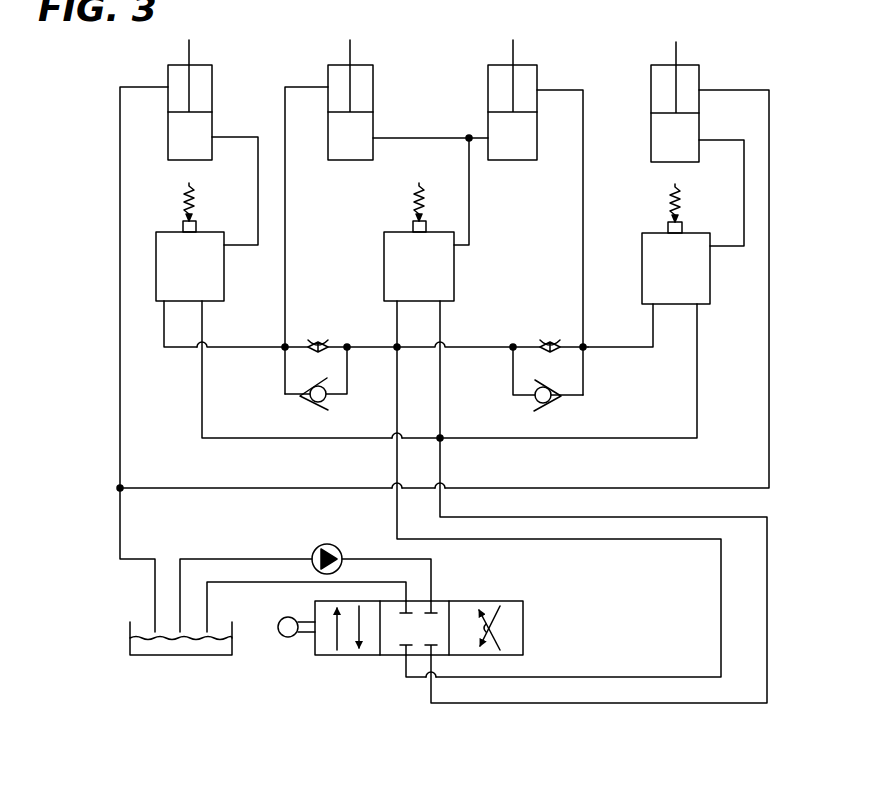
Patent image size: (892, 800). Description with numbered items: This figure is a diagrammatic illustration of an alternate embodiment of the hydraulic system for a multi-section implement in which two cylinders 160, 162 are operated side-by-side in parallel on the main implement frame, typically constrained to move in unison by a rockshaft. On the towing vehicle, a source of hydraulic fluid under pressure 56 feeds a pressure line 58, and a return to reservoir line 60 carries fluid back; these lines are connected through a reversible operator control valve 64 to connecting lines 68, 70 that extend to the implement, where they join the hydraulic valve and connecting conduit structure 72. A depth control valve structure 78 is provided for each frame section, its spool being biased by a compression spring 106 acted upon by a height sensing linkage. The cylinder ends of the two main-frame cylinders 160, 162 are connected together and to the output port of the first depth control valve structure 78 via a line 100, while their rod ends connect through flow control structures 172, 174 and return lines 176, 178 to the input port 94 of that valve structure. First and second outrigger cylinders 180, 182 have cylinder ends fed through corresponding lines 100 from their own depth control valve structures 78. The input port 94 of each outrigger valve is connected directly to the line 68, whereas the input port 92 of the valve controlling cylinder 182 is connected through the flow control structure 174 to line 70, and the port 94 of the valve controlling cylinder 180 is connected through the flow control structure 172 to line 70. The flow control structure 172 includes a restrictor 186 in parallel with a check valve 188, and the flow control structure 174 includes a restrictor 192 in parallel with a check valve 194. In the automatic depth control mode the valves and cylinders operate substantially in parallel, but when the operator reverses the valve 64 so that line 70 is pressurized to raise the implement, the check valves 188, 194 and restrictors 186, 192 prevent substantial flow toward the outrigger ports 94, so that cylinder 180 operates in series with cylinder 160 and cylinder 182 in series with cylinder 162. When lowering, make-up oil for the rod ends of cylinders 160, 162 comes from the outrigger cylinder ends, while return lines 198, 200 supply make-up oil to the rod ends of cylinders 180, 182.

The source of hydraulic fluid under pressure 56 is at (168, 666).
The pressure line 58 is at (432, 576).
The return to reservoir line 60 is at (395, 582).
The reversible operator control valve 64 is at (317, 666).
The connecting line 68 is at (440, 414).
The connecting line 70 is at (397, 414).
The hydraulic valve and connecting conduit structure 72 is at (753, 537).
The depth control valve structure 78 is at (173, 228).
The input port 92 is at (202, 328).
The input port 94 is at (164, 328).
The line 100 is at (258, 176).
The compression spring 106 is at (195, 193).
The cylinder 160 is at (531, 65).
The cylinder 162 is at (368, 65).
The flow control structure 172 is at (530, 323).
The flow control structure 174 is at (316, 326).
The return line 176 is at (583, 182).
The return line 178 is at (285, 182).
The first outrigger cylinder 180 is at (693, 65).
The second outrigger cylinder 182 is at (206, 65).
The restrictor 186 is at (548, 350).
The check valve 188 is at (549, 405).
The restrictor 192 is at (316, 350).
The check valve 194 is at (310, 404).
The return line 198 is at (769, 118).
The return line 200 is at (120, 160).